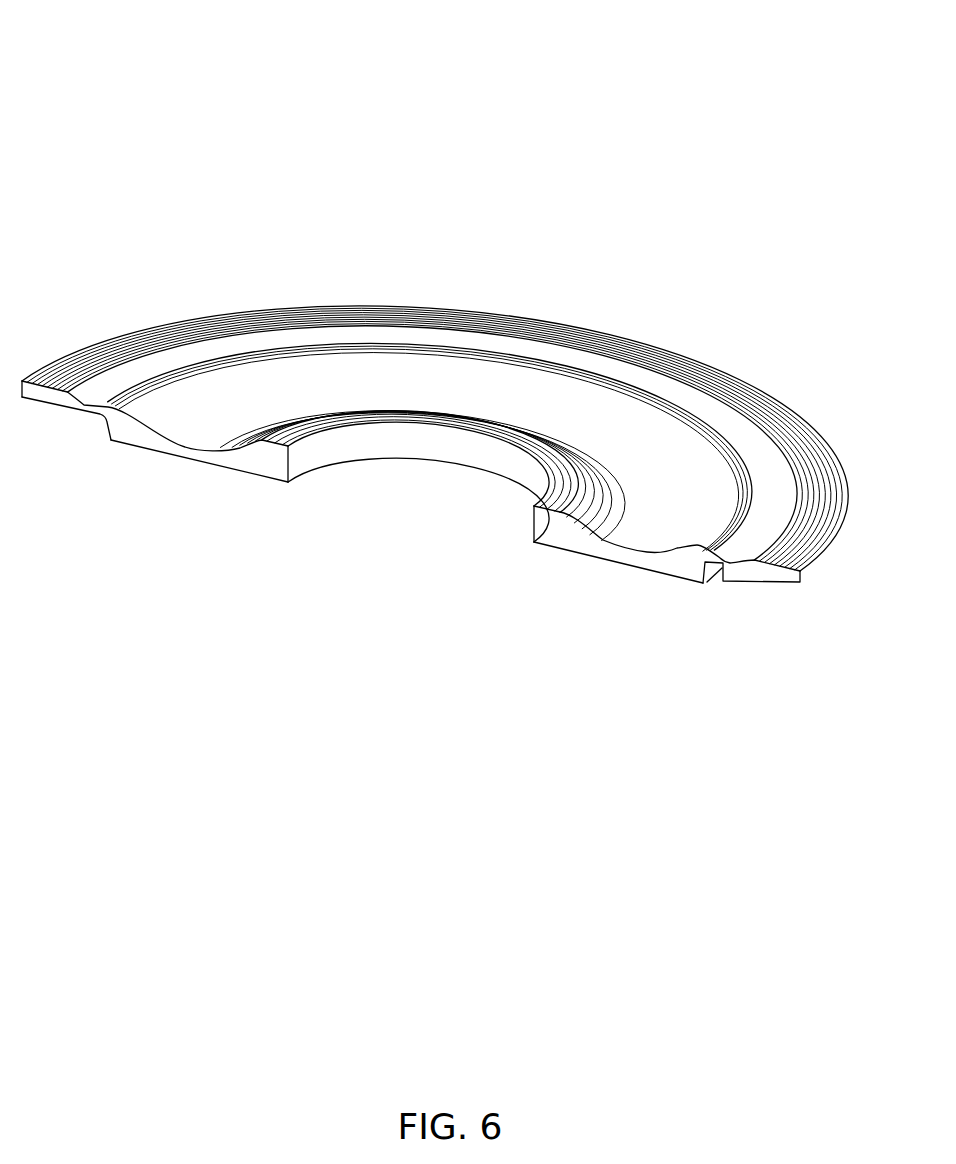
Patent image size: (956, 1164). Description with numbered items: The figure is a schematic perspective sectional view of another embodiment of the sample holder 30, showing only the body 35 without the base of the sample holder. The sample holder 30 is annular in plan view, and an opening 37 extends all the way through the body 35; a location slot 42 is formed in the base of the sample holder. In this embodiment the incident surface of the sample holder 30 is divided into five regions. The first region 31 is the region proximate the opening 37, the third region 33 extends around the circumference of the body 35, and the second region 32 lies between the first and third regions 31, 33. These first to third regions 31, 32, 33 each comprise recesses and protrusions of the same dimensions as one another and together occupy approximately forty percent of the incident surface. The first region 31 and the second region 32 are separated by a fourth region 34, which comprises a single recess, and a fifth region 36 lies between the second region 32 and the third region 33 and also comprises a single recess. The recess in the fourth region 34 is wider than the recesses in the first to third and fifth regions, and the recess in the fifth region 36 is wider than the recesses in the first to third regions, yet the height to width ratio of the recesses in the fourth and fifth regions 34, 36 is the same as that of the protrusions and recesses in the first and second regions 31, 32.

The sample holder 30 is at (160, 115).
The first region 31 is at (473, 422).
The second region 32 is at (683, 417).
The third region 33 is at (647, 357).
The fourth region 34 is at (562, 405).
The body 35 is at (240, 464).
The fifth region 36 is at (768, 483).
The opening 37 is at (397, 492).
The location slot 42 is at (107, 427).